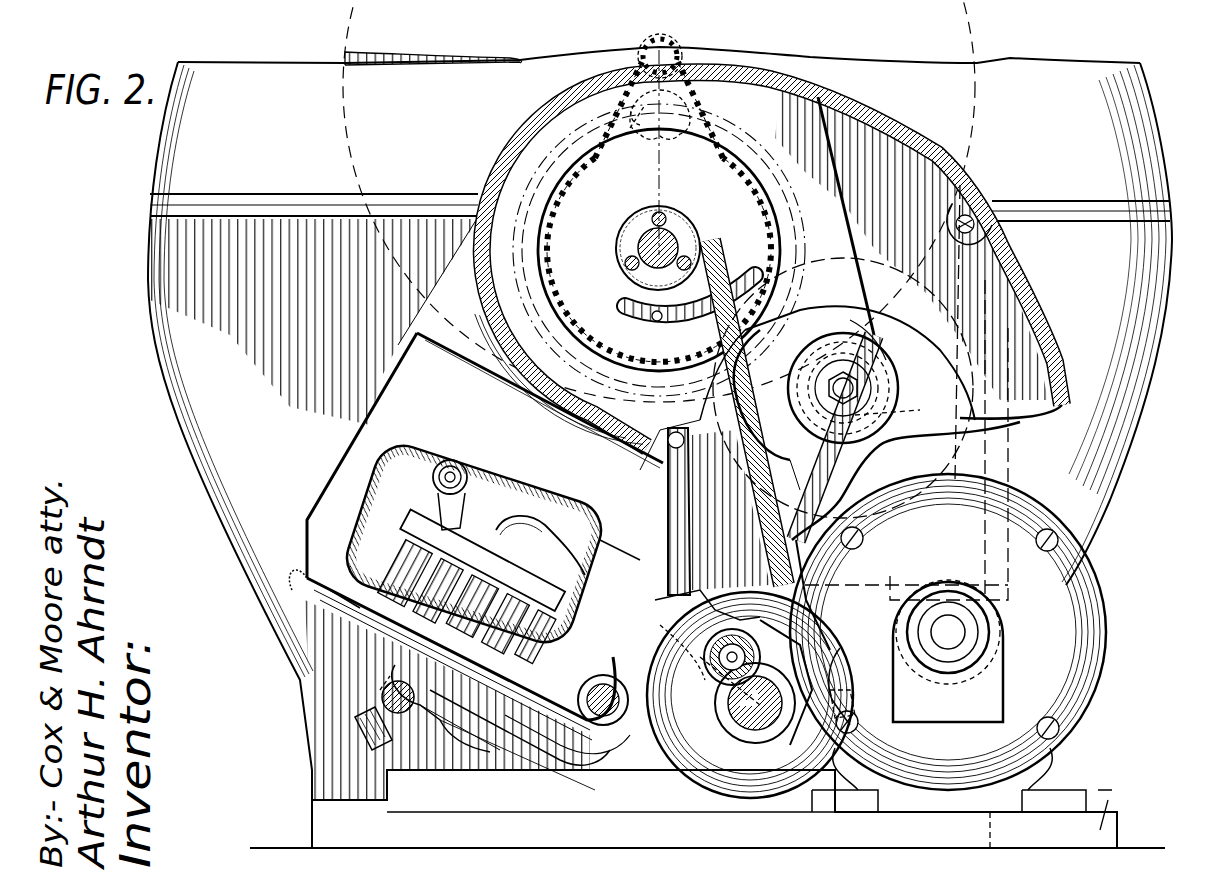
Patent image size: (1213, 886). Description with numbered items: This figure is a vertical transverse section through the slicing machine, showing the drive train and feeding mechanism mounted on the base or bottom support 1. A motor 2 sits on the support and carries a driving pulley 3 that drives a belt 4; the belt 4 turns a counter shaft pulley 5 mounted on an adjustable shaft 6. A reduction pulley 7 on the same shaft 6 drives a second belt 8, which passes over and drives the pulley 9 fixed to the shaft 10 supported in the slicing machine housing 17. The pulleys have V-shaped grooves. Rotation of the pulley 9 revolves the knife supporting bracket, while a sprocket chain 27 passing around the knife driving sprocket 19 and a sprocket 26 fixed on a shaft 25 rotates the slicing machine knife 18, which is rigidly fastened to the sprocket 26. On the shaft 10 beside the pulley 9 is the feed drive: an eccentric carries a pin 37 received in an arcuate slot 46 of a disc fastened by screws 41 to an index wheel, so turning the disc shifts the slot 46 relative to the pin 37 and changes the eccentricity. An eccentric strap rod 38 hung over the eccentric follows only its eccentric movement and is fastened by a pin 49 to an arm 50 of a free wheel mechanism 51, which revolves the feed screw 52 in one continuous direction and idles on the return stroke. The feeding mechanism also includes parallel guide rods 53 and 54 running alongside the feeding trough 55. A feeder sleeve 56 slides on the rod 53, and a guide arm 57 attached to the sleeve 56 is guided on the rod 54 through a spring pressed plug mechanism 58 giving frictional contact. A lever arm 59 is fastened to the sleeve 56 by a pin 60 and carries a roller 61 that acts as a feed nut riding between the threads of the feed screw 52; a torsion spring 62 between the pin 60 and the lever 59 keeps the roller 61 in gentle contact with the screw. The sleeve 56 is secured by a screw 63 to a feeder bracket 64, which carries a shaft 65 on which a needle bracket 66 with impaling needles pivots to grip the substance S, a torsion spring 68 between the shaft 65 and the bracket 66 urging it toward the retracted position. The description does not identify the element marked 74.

The base or bottom support 1 is at (707, 809).
The motor 2 is at (1080, 688).
The driving pulley 3 is at (936, 580).
The belt 4 is at (986, 462).
The counter shaft pulley 5 is at (968, 326).
The adjustable shaft 6 is at (860, 400).
The reduction pulley 7 is at (818, 350).
The belt 8 is at (850, 302).
The pulley 9 is at (798, 112).
The shaft 10 is at (640, 243).
The slicing machine housing 17 is at (1118, 136).
The slicing machine knife 18 is at (345, 58).
The knife driving sprocket 19 is at (560, 200).
The shaft 25 is at (678, 132).
The sprocket 26 is at (645, 132).
The sprocket chain 27 is at (745, 95).
The pin 37 is at (658, 322).
The eccentric strap rod 38 is at (768, 472).
The screws 41 is at (688, 258).
The arcuate slot 46 is at (730, 282).
The pin 49 is at (850, 700).
The arm 50 is at (795, 722).
The free wheel mechanism 51 is at (674, 794).
The feed screw 52 is at (740, 722).
The guide rod 53 is at (606, 715).
The guide rod 54 is at (382, 697).
The feeding trough 55 is at (540, 734).
The feeder sleeve 56 is at (566, 756).
The guide arm 57 is at (424, 706).
The spring pressed plug mechanism 58 is at (342, 746).
The lever arm 59 is at (530, 536).
The pin 60 is at (708, 660).
The roller 61 is at (720, 664).
The torsion spring 62 is at (660, 697).
The screw 63 is at (690, 592).
The feeder bracket 64 is at (610, 548).
The shaft 65 is at (560, 566).
The needle bracket 66 is at (472, 528).
The torsion spring 68 is at (398, 594).
The knob 74 is at (470, 480).
The substance S is at (560, 490).